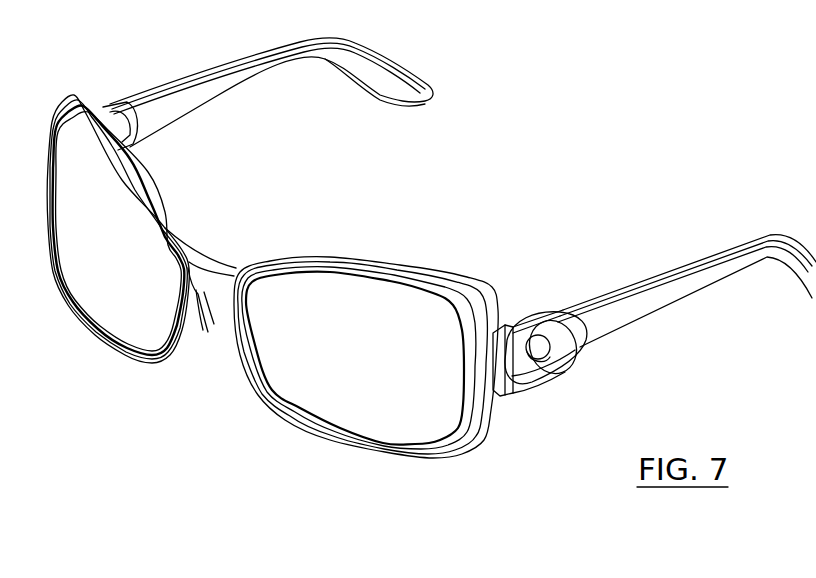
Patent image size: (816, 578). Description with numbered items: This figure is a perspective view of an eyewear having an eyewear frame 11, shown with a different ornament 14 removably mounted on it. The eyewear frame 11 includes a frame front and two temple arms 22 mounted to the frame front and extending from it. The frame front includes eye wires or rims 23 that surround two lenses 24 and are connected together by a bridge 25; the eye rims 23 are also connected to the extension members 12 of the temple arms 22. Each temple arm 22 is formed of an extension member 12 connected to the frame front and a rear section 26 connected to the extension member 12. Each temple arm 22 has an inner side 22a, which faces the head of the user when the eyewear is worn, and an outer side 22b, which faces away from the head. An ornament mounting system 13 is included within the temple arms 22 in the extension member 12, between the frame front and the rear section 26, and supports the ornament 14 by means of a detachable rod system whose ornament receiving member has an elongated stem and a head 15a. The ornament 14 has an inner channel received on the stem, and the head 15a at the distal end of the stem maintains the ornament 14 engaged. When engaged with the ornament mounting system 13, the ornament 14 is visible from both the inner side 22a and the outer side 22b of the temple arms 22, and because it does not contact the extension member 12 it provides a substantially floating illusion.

The eyewear frame 11 is at (474, 289).
The extension member 12 is at (516, 325).
The ornament mounting system 13 is at (552, 298).
The ornament 14 is at (567, 345).
The head 15a is at (540, 353).
The temple arm 22 is at (687, 299).
The inner side 22a is at (218, 92).
The outer side 22b is at (692, 282).
The eye wire 23 is at (345, 268).
The lens 24 is at (95, 279).
The bridge 25 is at (210, 284).
The rear section 26 is at (650, 299).